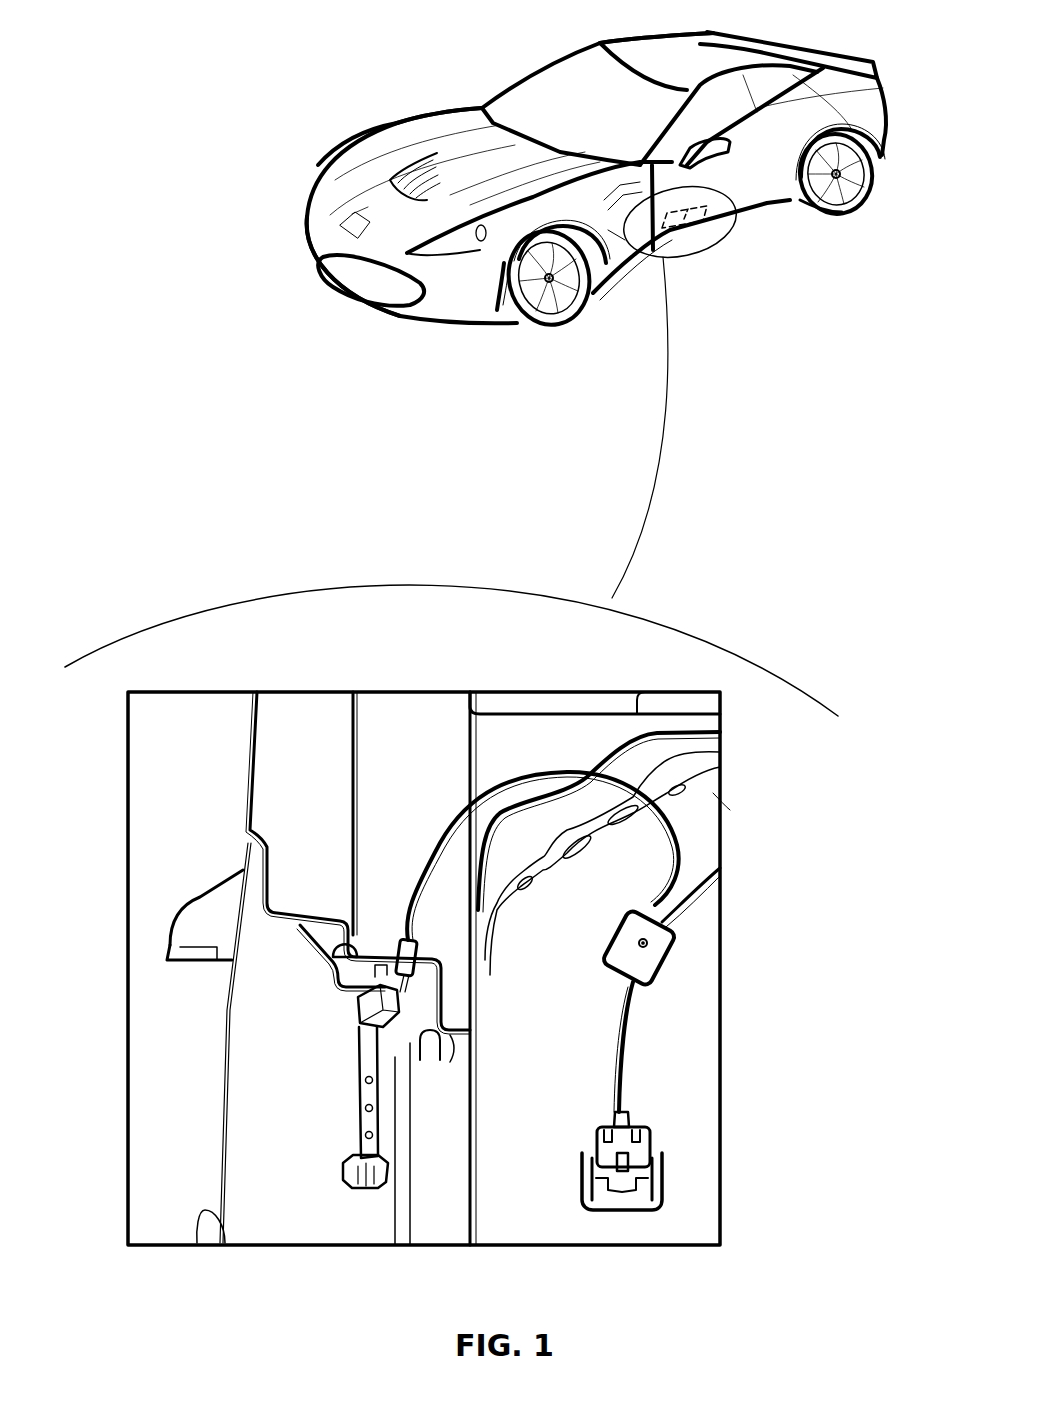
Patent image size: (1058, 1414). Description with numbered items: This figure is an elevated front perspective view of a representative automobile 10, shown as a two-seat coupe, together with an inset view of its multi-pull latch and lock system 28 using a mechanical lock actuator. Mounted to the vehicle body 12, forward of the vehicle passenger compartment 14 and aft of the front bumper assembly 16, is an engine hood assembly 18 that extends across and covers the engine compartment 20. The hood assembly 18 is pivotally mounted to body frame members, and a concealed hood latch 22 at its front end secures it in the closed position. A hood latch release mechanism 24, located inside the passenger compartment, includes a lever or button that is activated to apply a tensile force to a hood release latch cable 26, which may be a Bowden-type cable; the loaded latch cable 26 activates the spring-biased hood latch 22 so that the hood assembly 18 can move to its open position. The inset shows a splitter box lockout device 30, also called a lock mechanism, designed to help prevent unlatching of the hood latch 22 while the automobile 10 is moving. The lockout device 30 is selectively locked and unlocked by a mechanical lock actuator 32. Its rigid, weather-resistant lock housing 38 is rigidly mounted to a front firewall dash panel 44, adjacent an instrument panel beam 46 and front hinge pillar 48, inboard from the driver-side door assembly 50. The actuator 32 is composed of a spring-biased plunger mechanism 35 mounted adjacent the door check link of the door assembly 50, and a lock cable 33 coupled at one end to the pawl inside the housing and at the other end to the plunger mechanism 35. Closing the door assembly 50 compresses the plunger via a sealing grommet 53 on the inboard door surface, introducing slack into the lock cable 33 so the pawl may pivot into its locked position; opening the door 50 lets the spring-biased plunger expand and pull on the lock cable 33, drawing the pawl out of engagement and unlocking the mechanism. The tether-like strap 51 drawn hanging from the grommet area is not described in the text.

The automobile 10 is at (172, 88).
The vehicle body 12 is at (764, 214).
The vehicle passenger compartment 14 is at (598, 47).
The front bumper assembly 16 is at (312, 255).
The engine hood assembly 18 is at (381, 148).
The engine compartment 20 is at (404, 118).
The hood latch 22 is at (335, 223).
The hood latch release mechanism 24 is at (700, 232).
The hood release latch cable 26 is at (630, 1076).
The multi-pull latch and lock system 28 is at (758, 922).
The lockout device 30 is at (680, 966).
The mechanical lock actuator 32 is at (397, 893).
The lock cable 33 is at (712, 752).
The plunger mechanism 35 is at (345, 935).
The lock housing 38 is at (659, 943).
The front firewall dash panel 44 is at (705, 778).
The instrument panel beam 46 is at (497, 712).
The front hinge pillar 48 is at (254, 762).
The driver-side door assembly 50 is at (162, 917).
The tether strap 51 is at (367, 1093).
The sealing grommet 53 is at (375, 983).